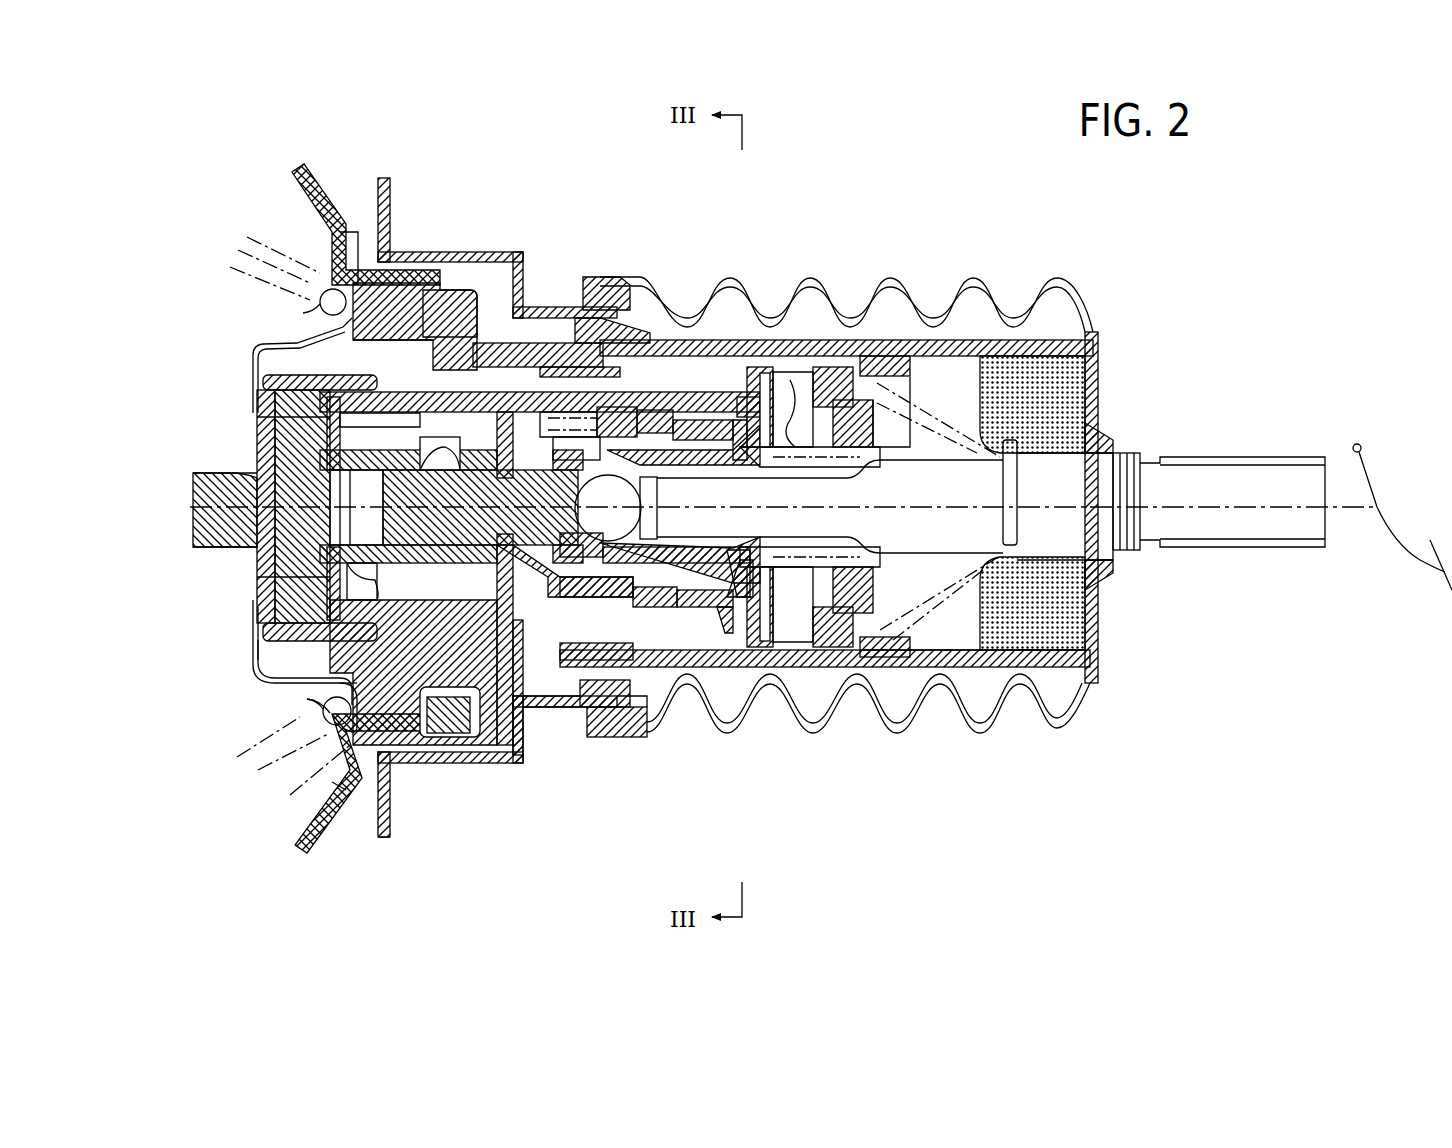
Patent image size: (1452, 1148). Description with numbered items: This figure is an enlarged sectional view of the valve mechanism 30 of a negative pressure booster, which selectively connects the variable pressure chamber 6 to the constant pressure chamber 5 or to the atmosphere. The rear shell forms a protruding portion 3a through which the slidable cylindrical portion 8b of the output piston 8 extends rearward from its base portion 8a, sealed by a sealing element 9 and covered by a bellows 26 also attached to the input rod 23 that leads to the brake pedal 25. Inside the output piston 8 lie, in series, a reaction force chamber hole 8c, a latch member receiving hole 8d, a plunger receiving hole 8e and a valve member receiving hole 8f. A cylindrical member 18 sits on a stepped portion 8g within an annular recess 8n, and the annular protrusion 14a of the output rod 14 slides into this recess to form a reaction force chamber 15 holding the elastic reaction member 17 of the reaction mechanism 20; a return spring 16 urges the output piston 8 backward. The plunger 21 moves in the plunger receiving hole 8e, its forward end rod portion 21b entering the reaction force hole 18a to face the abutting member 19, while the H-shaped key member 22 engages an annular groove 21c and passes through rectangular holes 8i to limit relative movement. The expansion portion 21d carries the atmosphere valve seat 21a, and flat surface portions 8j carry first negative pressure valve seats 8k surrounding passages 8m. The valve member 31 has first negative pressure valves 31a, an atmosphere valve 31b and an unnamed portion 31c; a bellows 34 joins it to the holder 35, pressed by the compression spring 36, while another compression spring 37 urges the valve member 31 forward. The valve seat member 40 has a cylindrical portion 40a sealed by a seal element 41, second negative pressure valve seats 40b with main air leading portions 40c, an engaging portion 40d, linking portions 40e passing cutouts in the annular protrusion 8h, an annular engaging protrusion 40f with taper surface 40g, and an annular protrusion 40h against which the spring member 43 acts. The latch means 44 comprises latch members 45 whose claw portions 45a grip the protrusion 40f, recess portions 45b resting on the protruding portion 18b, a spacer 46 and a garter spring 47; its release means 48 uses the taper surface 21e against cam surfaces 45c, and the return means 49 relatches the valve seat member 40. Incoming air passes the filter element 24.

The protruding portion 3a is at (497, 770).
The constant pressure chamber 5 is at (289, 508).
The variable pressure chamber 6 is at (473, 198).
The output piston 8 is at (785, 559).
The base portion 8a is at (374, 857).
The slidable cylindrical portion 8b is at (826, 334).
The reaction force chamber hole 8c is at (285, 699).
The latch member receiving hole 8d is at (408, 669).
The plunger receiving hole 8e is at (607, 770).
The valve member receiving hole 8f is at (974, 746).
The stepped portion 8g is at (277, 367).
The annular protrusion 8h is at (606, 245).
The rectangular holes 8i is at (551, 744).
The flat surface portions 8j is at (805, 322).
The first negative pressure valve seats 8k is at (754, 341).
The passages 8m is at (703, 331).
The annular recess 8n is at (298, 798).
The sealing element 9 is at (617, 747).
The output rod 14 is at (187, 506).
The annular protrusion 14a is at (202, 607).
The reaction force chamber 15 is at (230, 489).
The return spring 16 is at (290, 443).
The reaction member 17 is at (250, 408).
The cylindrical member 18 is at (357, 500).
The reaction force hole 18a is at (251, 629).
The protruding portion 18b is at (314, 449).
The abutting member 19 is at (228, 597).
The reaction mechanism 20 is at (315, 693).
The plunger 21 is at (540, 345).
The atmosphere valve seat 21a is at (844, 694).
The forward end rod portion 21b is at (260, 557).
The annular groove 21c is at (587, 285).
The expansion portion 21d is at (660, 687).
The taper surface 21e is at (332, 799).
The key member 22 is at (502, 756).
The input rod 23 is at (950, 367).
The filter element 24 is at (1110, 518).
The brake pedal 25 is at (1398, 545).
The bellows 26 is at (1160, 605).
The valve mechanism 30 is at (803, 312).
The valve member 31 is at (843, 334).
The first negative pressure valves 31a is at (780, 294).
The atmosphere valve 31b is at (841, 676).
The seal holder portion 31c is at (786, 677).
The bellows 34 is at (876, 295).
The annular holder 35 is at (938, 431).
The compression spring 36 is at (1109, 388).
The compression spring 37 is at (909, 312).
The valve seat member 40 is at (618, 678).
The cylindrical portion 40a is at (620, 308).
The second negative pressure valve seats 40b is at (775, 699).
The main air leading portions 40c is at (712, 689).
The annular engaging portion 40d is at (485, 266).
The linking portions 40e is at (566, 744).
The annular engaging protrusion 40f is at (434, 249).
The taper surface 40g is at (421, 278).
The annular protrusion 40h is at (645, 289).
The seal element 41 is at (612, 759).
The spring member 43 is at (576, 302).
The latch means 44 is at (403, 686).
The latch members 45 is at (275, 509).
The claw portions 45a is at (464, 652).
The recess portions 45b is at (268, 427).
The cam surface 45c is at (262, 765).
The spacer 46 is at (195, 648).
The garter spring 47 is at (233, 317).
The release means 48 is at (310, 757).
The return means 49 is at (402, 248).